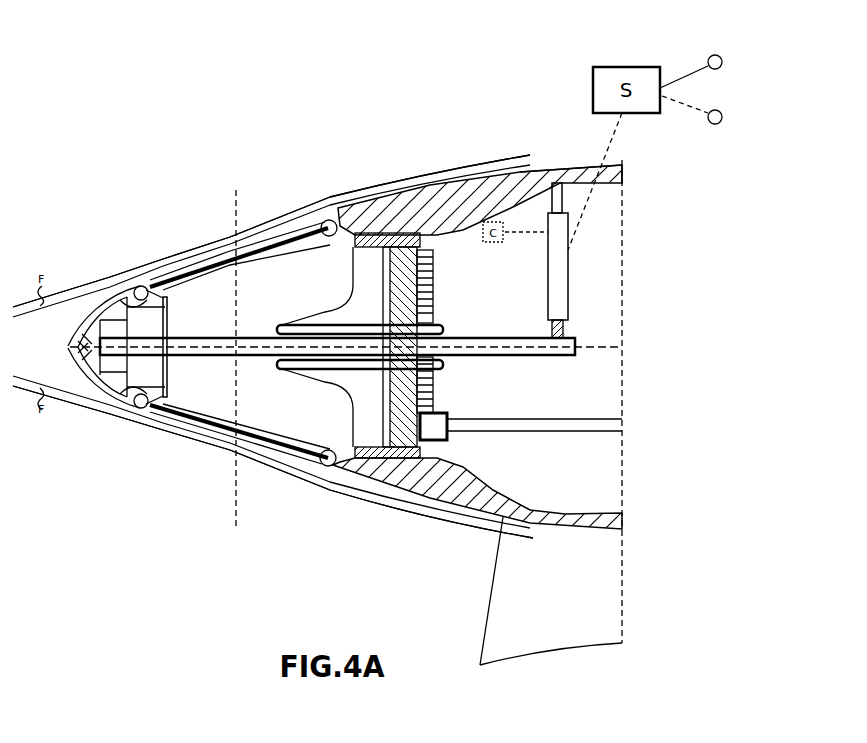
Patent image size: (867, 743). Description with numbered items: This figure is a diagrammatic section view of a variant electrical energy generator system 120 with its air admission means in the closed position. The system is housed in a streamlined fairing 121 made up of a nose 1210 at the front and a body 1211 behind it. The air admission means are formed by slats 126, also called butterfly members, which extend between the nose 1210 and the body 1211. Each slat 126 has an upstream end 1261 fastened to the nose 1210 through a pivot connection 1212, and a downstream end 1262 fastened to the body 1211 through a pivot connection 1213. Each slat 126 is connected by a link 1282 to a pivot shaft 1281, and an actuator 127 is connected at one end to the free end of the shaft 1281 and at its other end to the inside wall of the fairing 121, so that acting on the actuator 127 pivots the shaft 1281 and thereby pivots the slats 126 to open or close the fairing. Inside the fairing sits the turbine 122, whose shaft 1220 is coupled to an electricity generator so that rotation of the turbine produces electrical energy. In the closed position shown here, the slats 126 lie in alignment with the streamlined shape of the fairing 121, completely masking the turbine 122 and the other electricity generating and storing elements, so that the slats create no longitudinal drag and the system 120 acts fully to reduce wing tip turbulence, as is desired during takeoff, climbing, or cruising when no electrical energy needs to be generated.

The electrical energy generator system 120 is at (201, 139).
The fairing 121 is at (462, 173).
The body of the fairing 1211 is at (590, 168).
The pivot connection 1213 is at (328, 220).
The link 1282 is at (168, 315).
The slat 126 is at (213, 244).
The upstream end of the slat 1261 is at (163, 258).
The pivot connection 1212 is at (138, 287).
The nose 1210 is at (72, 347).
The pivot shaft 1281 is at (254, 337).
The actuator 127 is at (548, 264).
The turbine 122 is at (440, 394).
The shaft of the turbine 1220 is at (527, 418).
The downstream end of the slat 1262 is at (325, 228).